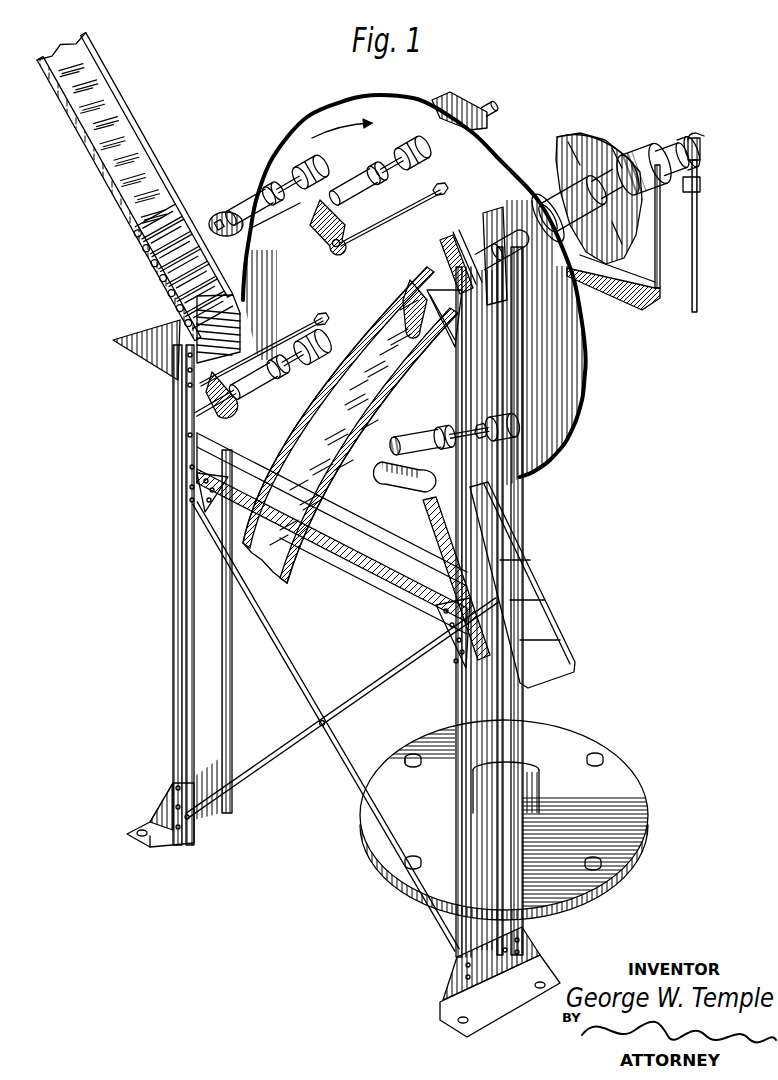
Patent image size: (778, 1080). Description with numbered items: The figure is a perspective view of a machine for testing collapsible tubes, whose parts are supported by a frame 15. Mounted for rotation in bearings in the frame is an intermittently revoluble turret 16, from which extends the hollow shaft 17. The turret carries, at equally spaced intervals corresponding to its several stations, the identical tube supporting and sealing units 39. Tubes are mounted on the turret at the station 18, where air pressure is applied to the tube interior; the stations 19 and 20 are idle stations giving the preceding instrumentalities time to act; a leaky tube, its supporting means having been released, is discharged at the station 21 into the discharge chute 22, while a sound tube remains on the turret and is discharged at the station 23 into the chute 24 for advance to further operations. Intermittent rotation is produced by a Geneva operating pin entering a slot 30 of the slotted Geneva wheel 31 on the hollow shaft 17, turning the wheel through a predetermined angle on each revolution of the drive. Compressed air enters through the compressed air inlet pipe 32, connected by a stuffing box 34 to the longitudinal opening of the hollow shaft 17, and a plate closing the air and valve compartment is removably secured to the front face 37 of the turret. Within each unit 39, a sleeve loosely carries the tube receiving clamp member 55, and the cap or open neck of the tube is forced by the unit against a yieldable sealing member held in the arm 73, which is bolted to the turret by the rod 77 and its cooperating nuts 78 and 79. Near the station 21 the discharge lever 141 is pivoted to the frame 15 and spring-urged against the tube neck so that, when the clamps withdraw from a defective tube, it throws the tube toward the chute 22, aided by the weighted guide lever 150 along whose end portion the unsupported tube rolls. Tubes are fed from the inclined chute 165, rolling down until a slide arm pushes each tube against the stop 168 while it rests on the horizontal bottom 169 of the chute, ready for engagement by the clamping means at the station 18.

The frame 15 is at (626, 290).
The turret 16 is at (580, 410).
The hollow shaft 17 is at (659, 142).
The station 18 is at (323, 360).
The station 19 is at (308, 168).
The station 20 is at (423, 153).
The station 21 is at (500, 235).
The discharge chute 22 is at (396, 401).
The station 23 is at (511, 421).
The chute 24 is at (549, 618).
The slot 30 is at (563, 141).
The slotted Geneva wheel 31 is at (594, 141).
The compressed air inlet pipe 32 is at (694, 292).
The stuffing box 34 is at (684, 140).
The front face of the turret 37 is at (529, 336).
The tube supporting and sealing unit 39 is at (238, 206).
The tube receiving clamp member 55 is at (298, 172).
The arm 73 is at (223, 235).
The rod 77 is at (376, 221).
The nut 78 is at (338, 248).
The nut 79 is at (451, 184).
The discharge lever 141 is at (449, 332).
The guide lever 150 is at (436, 255).
The inclined chute 165 is at (138, 140).
The stop 168 is at (257, 390).
The horizontal bottom 169 is at (138, 332).